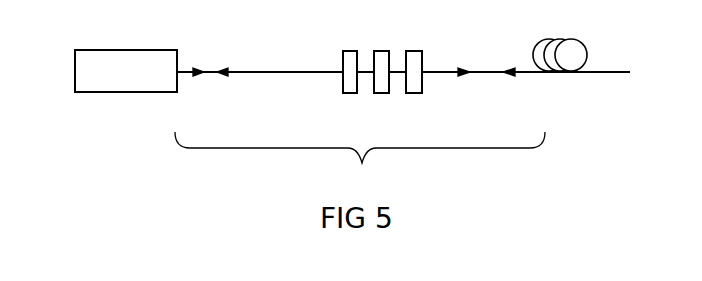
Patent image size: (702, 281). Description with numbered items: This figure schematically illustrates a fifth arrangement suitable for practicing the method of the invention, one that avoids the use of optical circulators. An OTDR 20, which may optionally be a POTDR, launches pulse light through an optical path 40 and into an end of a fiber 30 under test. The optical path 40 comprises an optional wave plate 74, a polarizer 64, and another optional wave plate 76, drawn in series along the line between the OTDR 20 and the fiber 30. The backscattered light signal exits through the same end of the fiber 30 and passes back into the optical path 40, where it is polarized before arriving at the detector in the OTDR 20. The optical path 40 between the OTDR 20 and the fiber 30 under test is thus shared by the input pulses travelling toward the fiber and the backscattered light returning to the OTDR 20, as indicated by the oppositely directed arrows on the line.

The OTDR 20 is at (115, 50).
The fiber under test 30 is at (548, 37).
The optical path 40 is at (360, 159).
The polarizer 64 is at (378, 95).
The wave plate 74 is at (340, 95).
The wave plate 76 is at (422, 95).